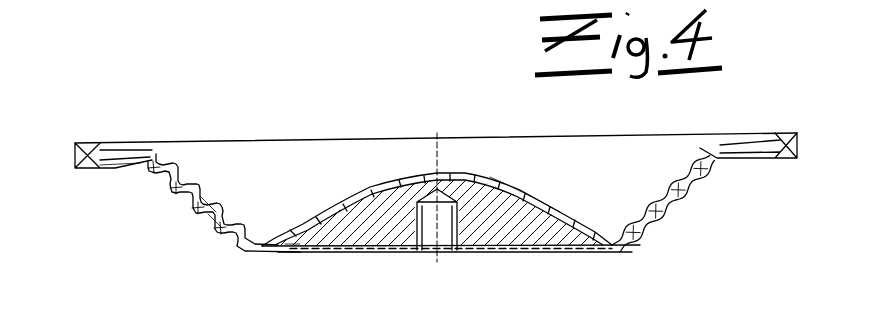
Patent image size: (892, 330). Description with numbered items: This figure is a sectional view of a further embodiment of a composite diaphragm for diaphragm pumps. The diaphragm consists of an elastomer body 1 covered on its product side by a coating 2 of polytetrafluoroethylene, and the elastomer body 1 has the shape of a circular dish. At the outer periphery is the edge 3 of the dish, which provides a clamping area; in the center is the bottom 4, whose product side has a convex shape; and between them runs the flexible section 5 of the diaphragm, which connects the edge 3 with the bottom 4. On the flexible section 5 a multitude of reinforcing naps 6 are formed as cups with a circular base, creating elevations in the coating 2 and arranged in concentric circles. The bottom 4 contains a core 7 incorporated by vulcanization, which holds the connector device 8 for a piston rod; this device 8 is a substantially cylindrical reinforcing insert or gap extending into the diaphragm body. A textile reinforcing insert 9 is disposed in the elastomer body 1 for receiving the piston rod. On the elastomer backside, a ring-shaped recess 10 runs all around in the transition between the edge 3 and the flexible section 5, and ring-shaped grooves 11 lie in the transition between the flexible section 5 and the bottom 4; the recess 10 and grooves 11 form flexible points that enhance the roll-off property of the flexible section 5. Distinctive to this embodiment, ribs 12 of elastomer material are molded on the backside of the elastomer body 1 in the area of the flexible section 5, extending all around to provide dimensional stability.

The elastomer body 1 is at (670, 203).
The coating 2 is at (513, 183).
The edge of the dish 3 is at (91, 140).
The bottom 4 is at (377, 180).
The flexible section of the diaphragm 5 is at (221, 192).
The naps 6 is at (198, 200).
The core 7 is at (508, 224).
The device 8 is at (438, 250).
The textile reinforcing insert 9 is at (204, 224).
The recess 10 is at (115, 174).
The ring-shaped grooves 11 is at (282, 252).
The ribs 12 is at (718, 166).